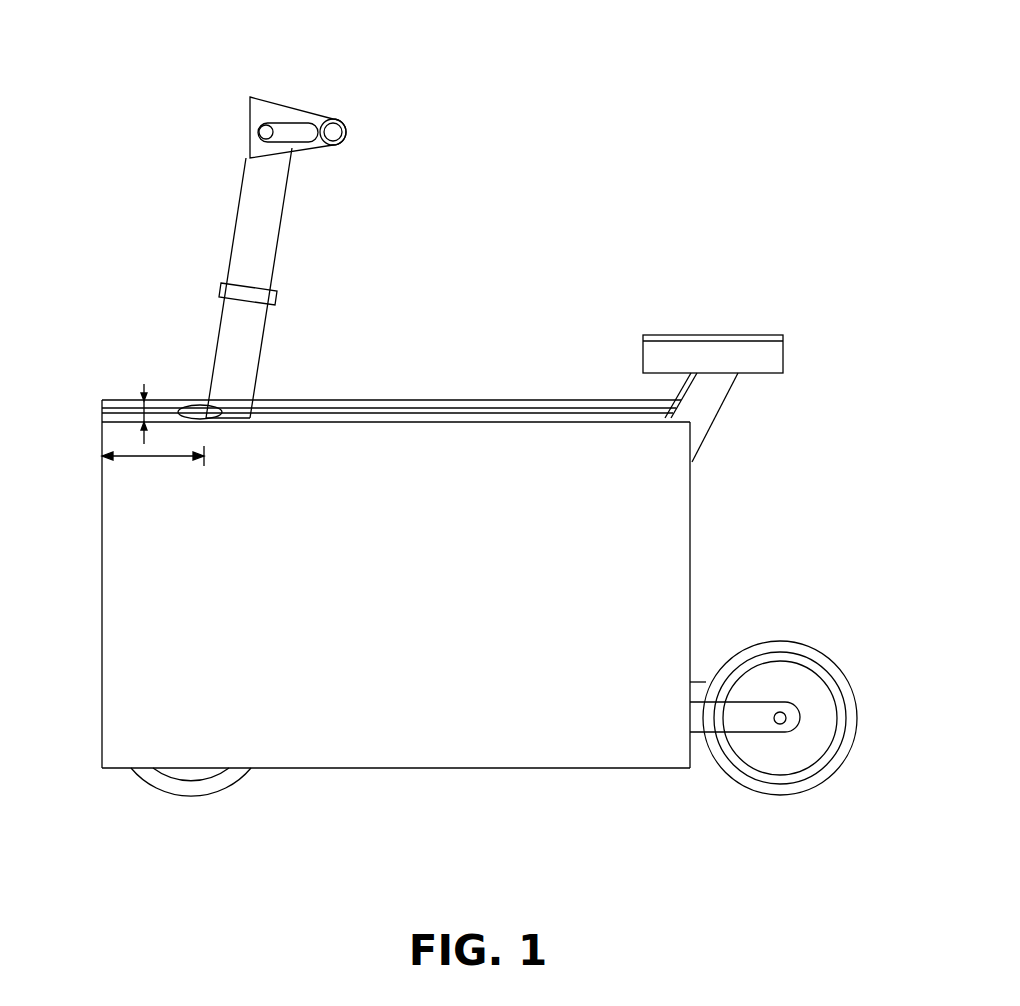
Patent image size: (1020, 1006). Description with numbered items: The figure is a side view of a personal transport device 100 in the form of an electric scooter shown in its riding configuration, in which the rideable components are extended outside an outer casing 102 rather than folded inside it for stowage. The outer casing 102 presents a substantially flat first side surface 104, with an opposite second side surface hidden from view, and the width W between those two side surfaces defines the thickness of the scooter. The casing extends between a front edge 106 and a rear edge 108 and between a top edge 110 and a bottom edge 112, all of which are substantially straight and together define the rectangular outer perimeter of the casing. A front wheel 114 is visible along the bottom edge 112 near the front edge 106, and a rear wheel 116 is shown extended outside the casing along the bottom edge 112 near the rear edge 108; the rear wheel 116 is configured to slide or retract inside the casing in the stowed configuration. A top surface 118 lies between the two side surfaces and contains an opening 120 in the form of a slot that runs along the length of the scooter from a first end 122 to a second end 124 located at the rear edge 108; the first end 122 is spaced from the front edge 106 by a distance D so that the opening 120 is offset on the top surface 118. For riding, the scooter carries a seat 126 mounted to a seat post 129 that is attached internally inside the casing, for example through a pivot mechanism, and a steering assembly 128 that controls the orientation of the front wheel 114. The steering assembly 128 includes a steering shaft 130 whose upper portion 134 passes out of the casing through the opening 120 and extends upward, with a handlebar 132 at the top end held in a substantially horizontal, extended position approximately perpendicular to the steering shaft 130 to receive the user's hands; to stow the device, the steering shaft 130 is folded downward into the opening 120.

The personal transport device 100 is at (428, 486).
The outer casing 102 is at (428, 623).
The first side surface 104 is at (431, 597).
The front edge 106 is at (102, 603).
The rear edge 108 is at (690, 553).
The top edge 110 is at (397, 400).
The bottom edge 112 is at (448, 768).
The front wheel 114 is at (190, 795).
The rear wheel 116 is at (780, 795).
The top surface 118 is at (391, 362).
The opening 120 is at (345, 415).
The first end 122 is at (190, 405).
The second end 124 is at (764, 417).
The seat 126 is at (710, 352).
The steering assembly 128 is at (295, 131).
The seat post 129 is at (720, 392).
The steering shaft 130 is at (242, 220).
The handlebar 132 is at (305, 133).
The upper portion 134 is at (280, 243).
The width W is at (145, 408).
The distance D is at (157, 462).